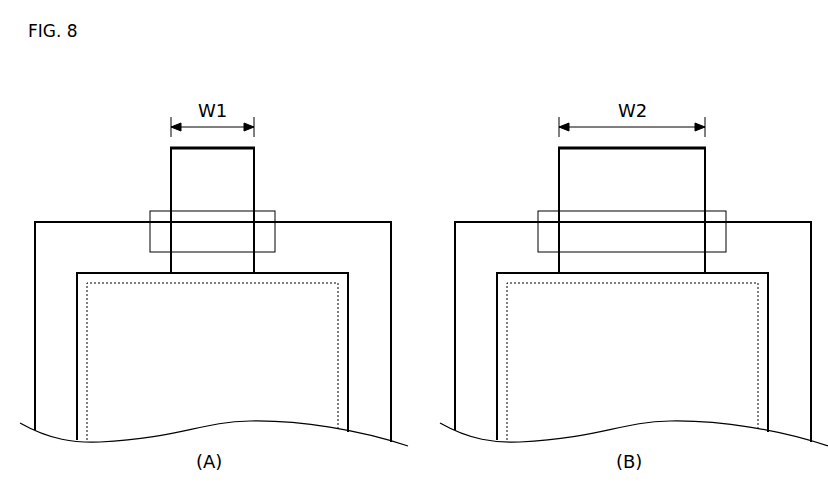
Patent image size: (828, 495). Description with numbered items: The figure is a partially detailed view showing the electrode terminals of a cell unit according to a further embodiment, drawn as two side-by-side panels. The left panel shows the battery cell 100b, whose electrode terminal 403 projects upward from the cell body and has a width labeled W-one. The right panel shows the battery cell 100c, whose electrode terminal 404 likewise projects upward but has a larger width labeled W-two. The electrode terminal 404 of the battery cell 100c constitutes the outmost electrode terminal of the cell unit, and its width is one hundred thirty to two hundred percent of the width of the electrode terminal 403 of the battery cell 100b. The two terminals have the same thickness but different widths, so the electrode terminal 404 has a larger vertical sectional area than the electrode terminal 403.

The battery cell 100b is at (101, 196).
The battery cell 100c is at (519, 196).
The electrode terminal 403 is at (233, 179).
The electrode terminal 404 is at (680, 179).